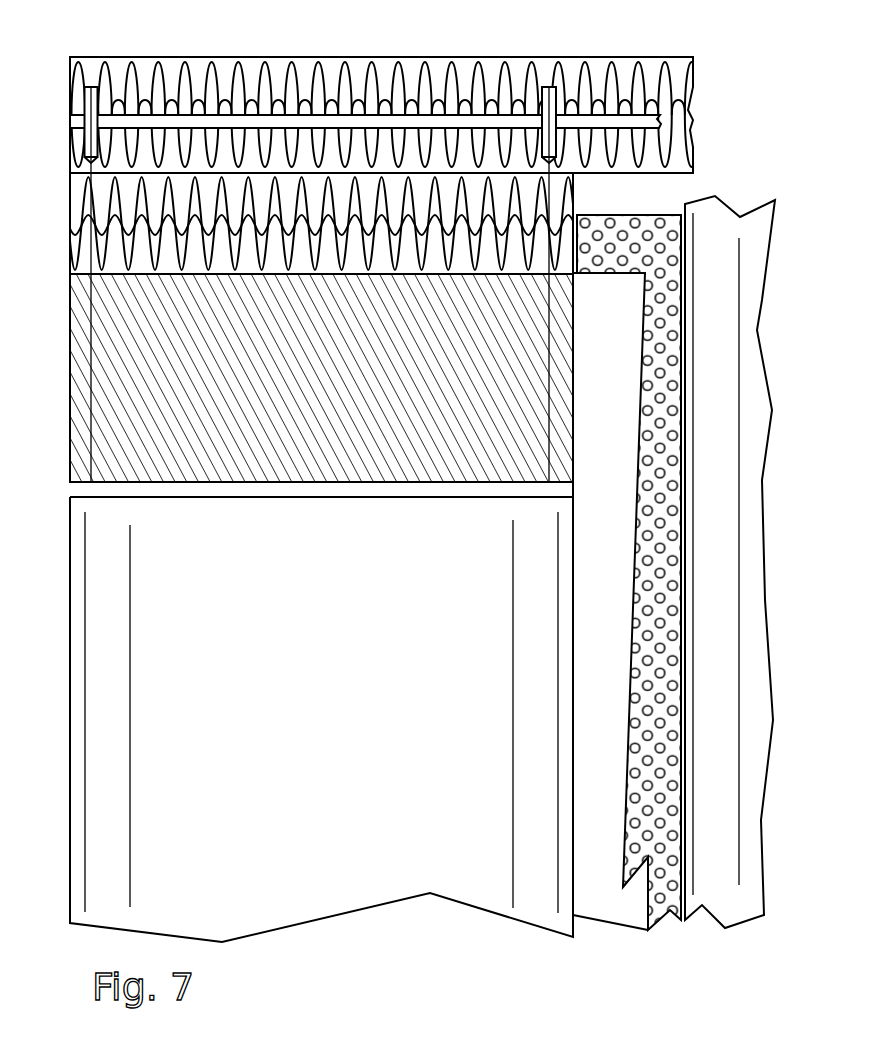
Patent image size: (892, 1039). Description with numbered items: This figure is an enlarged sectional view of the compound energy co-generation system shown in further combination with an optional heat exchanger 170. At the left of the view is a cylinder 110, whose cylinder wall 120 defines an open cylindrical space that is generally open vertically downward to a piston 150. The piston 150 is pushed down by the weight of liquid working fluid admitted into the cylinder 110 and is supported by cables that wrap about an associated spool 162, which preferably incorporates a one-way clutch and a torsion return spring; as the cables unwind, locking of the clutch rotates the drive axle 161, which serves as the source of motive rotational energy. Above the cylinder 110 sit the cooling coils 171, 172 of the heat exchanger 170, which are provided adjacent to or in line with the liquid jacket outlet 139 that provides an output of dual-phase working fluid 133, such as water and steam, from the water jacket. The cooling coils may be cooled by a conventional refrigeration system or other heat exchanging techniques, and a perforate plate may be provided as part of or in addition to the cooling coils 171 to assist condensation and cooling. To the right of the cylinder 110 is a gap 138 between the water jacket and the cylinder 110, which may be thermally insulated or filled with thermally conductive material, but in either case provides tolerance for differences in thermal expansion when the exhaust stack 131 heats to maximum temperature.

The cylinder 110 is at (69, 310).
The cylinder wall 120 is at (78, 620).
The exhaust stack 131 is at (728, 217).
The dual-phase working fluid 133 is at (648, 221).
The gap 138 is at (592, 882).
The liquid jacket outlet 139 is at (587, 233).
The piston 150 is at (96, 489).
The drive axle 161 is at (380, 125).
The spool 162 is at (557, 85).
The heat exchanger 170 is at (357, 244).
The cooling coil 171 is at (80, 258).
The cooling coil 172 is at (241, 57).